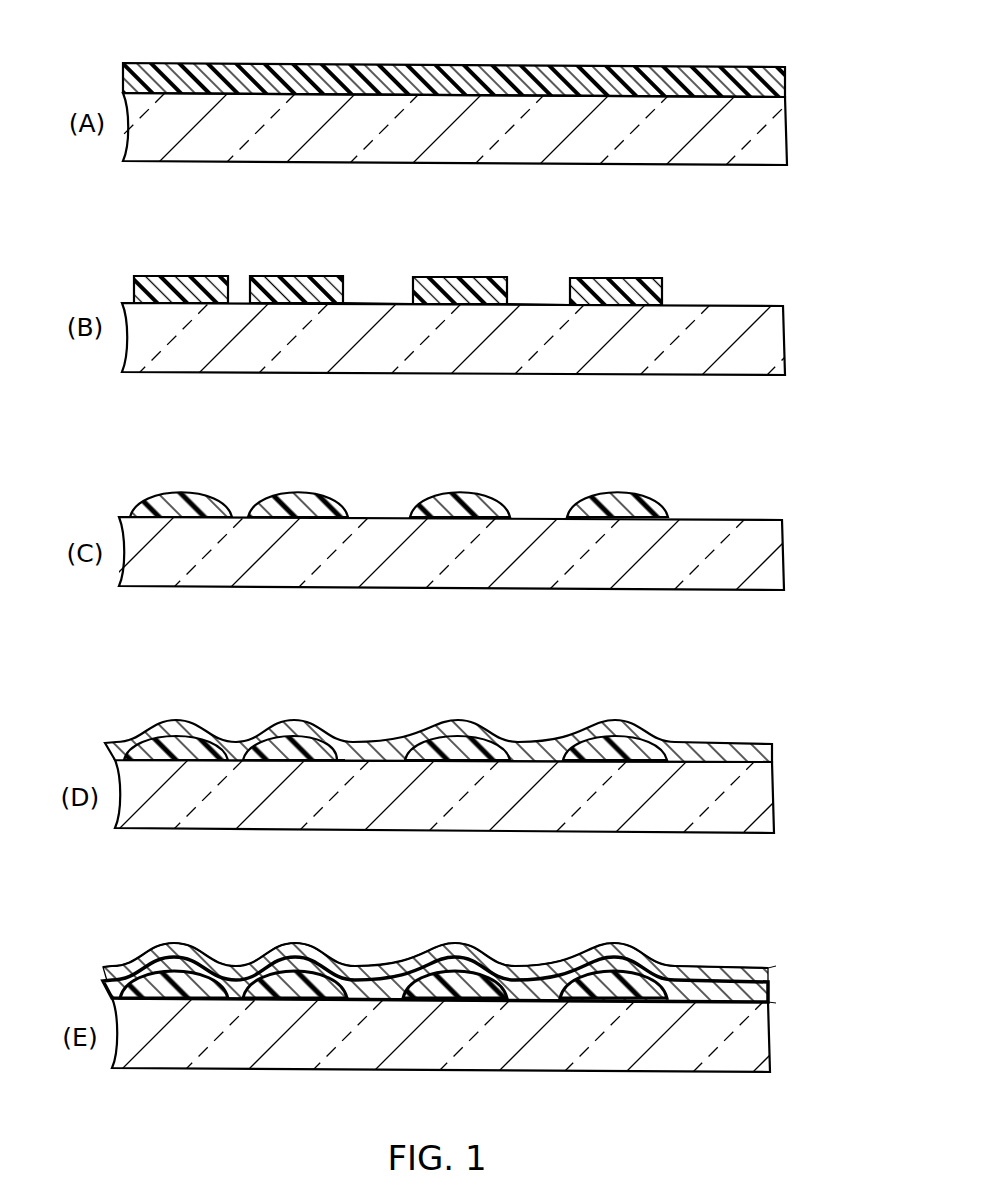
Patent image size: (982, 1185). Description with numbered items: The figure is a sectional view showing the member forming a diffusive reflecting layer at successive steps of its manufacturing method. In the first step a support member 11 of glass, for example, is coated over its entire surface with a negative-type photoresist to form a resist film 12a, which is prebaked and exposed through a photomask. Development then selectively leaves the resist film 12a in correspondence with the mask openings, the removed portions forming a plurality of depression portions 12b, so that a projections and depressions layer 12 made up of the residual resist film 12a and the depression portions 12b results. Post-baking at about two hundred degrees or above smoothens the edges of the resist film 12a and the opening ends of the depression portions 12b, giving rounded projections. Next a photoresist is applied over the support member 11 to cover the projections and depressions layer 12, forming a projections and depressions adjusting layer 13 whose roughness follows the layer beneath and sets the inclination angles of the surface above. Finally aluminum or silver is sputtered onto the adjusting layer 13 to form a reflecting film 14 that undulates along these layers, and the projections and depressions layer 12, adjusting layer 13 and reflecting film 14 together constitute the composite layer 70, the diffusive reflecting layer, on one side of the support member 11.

The support member 11 is at (261, 110).
The projections and depressions layer 12 is at (441, 225).
The resist film 12a is at (462, 78).
The depression portions 12b is at (619, 282).
The projections and depressions adjusting layer 13 is at (680, 750).
The reflecting film 14 is at (715, 975).
The composite layer 70 is at (784, 964).